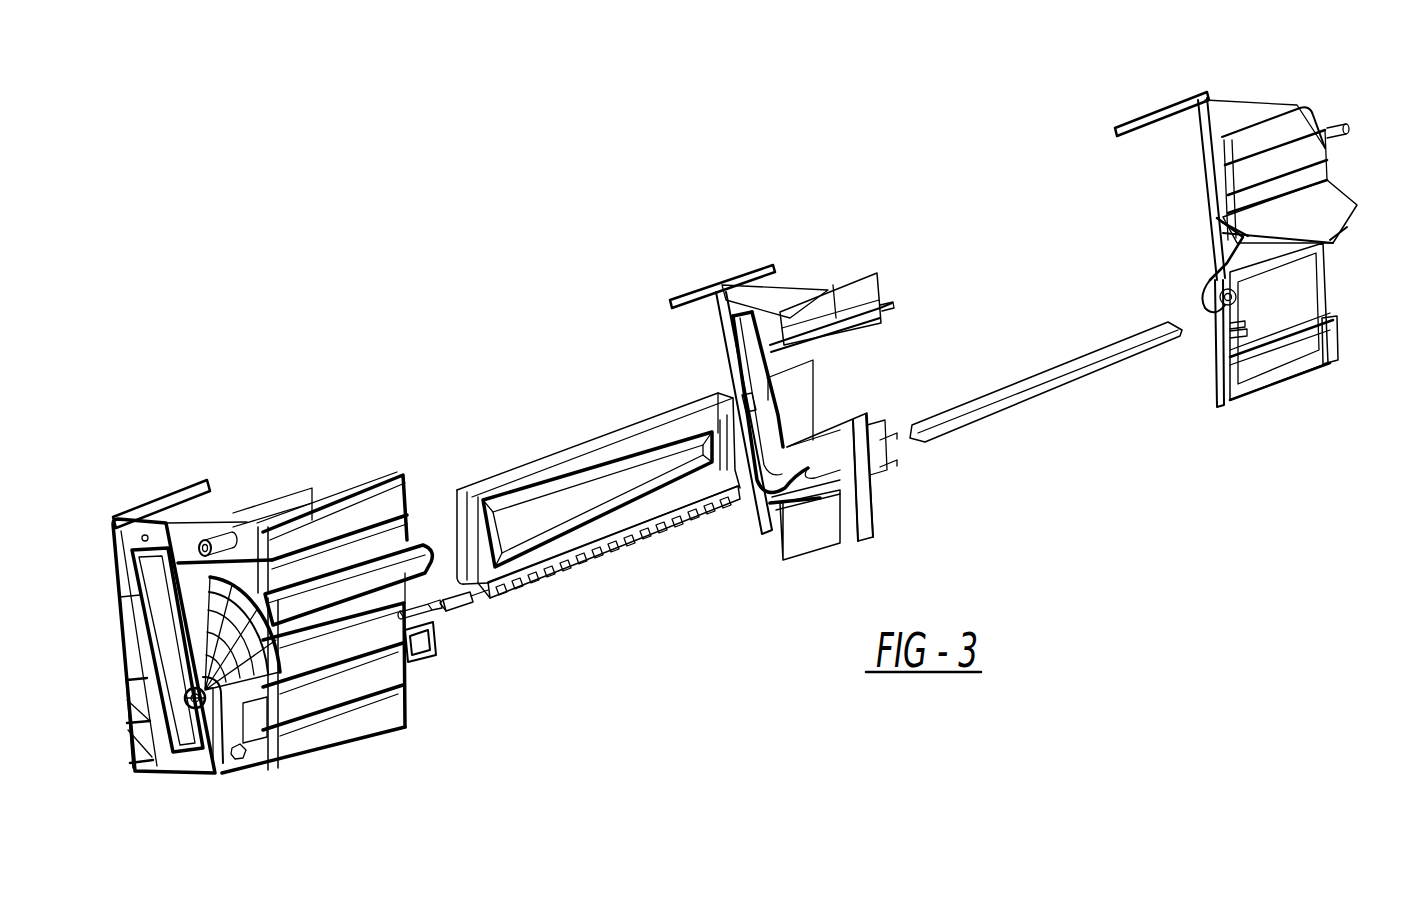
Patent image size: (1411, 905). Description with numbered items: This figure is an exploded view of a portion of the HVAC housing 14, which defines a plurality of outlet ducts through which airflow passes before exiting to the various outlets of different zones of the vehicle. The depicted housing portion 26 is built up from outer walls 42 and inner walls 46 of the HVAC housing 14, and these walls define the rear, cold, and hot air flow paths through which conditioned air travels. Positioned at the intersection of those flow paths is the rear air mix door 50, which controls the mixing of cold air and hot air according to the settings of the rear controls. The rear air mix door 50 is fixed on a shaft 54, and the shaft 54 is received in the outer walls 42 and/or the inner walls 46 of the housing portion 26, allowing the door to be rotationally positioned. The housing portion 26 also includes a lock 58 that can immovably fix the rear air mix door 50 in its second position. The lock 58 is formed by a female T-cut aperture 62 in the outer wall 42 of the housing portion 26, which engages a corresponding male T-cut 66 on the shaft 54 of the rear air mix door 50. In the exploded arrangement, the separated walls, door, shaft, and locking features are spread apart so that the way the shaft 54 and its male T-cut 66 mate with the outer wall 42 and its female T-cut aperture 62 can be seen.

The HVAC housing 14 is at (1282, 293).
The housing portion 26 is at (598, 185).
The outer walls 42 is at (378, 505).
The inner walls 46 is at (723, 350).
The rear air mix door 50 is at (567, 470).
The shaft 54 is at (470, 598).
The lock 58 is at (195, 727).
The female T-cut aperture 62 is at (195, 700).
The male T-cut 66 is at (455, 603).